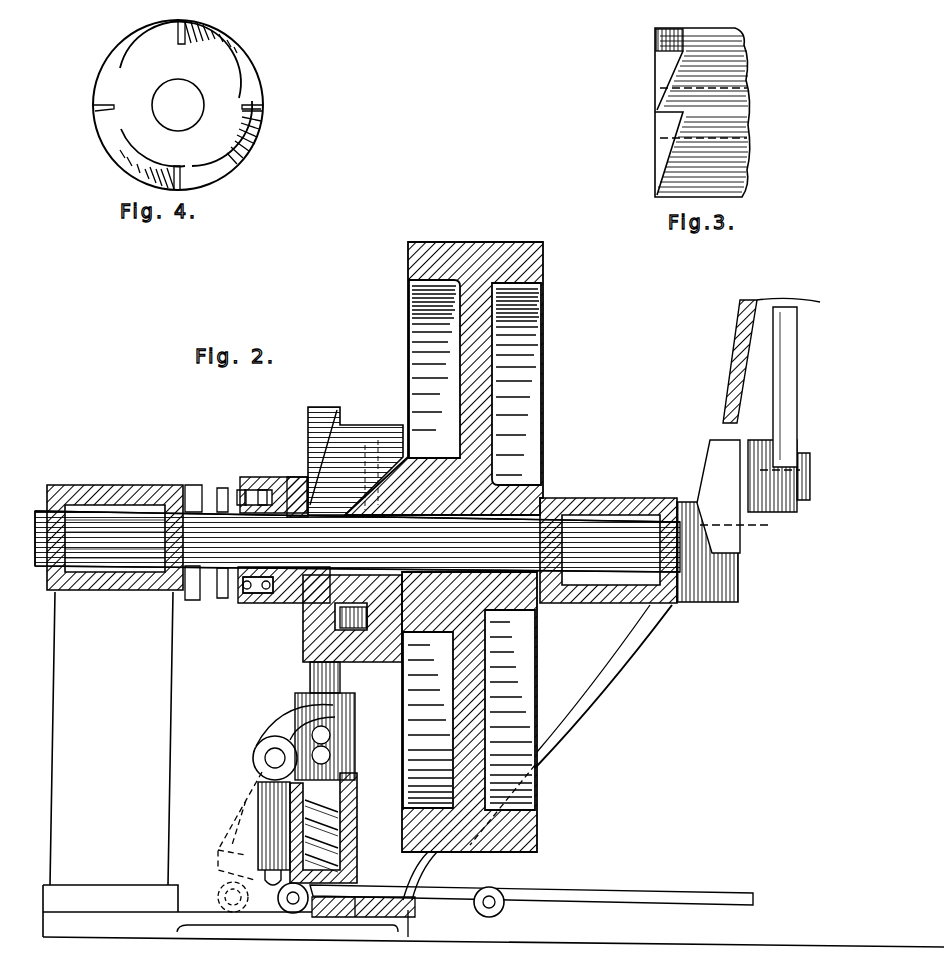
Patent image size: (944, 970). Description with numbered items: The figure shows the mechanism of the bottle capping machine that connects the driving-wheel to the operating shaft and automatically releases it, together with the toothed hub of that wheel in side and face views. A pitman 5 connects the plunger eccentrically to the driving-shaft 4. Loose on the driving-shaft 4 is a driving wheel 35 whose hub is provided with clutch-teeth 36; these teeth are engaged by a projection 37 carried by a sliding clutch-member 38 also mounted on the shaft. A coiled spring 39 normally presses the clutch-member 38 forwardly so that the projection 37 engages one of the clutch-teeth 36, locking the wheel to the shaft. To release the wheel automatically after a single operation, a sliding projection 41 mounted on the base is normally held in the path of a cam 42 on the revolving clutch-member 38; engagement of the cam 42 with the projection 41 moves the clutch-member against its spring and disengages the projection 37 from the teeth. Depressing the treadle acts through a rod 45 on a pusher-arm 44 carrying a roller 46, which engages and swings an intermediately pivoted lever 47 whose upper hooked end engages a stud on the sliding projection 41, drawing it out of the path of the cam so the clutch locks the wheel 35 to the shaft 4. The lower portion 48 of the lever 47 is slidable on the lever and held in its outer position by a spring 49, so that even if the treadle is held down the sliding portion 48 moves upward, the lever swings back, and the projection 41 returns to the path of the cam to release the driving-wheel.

In FIG. 2, the driving-shaft 4 is at (604, 542).
In FIG. 2, the pitman 5 is at (782, 360).
In FIG. 2, the driving wheel 35 is at (525, 650).
In FIG. 4, the clutch-teeth 36 is at (104, 106).
In FIG. 3, the clutch-teeth 36 is at (657, 40).
In FIG. 2, the projection 37 is at (335, 624).
In FIG. 2, the sliding clutch-member 38 is at (290, 606).
In FIG. 2, the coiled spring 39 is at (228, 596).
In FIG. 2, the sliding projection 41 is at (310, 681).
In FIG. 2, the cam 42 is at (308, 422).
In FIG. 2, the pusher-arm 44 is at (452, 893).
In FIG. 2, the rod 45 is at (594, 897).
In FIG. 2, the roller 46 is at (290, 912).
In FIG. 2, the lever 47 is at (262, 772).
In FIG. 2, the lower portion of the lever 48 is at (340, 800).
In FIG. 2, the spring 49 is at (245, 800).